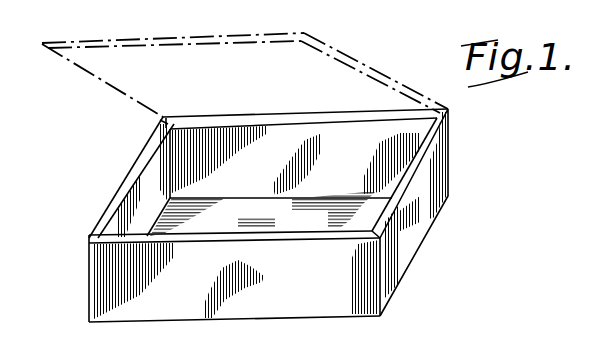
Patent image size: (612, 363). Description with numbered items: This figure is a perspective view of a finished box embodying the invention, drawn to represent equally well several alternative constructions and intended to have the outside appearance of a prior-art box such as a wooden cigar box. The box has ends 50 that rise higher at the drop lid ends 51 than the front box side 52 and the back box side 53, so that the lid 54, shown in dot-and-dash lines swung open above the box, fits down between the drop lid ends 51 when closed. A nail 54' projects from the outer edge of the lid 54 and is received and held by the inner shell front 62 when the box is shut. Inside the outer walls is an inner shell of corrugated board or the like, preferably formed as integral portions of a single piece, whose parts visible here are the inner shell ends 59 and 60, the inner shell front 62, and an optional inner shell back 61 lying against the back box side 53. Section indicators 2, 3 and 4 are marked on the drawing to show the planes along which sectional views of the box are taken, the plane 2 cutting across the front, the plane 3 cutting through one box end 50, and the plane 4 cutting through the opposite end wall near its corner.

The box ends 50 is at (417, 190).
The drop lid ends 51 is at (97, 238).
The front box side 52 is at (173, 262).
The back box side 53 is at (249, 143).
The lid 54 is at (374, 71).
The nail 54' is at (173, 64).
The inner shell end 59 is at (152, 142).
The inner shell end 60 is at (431, 173).
The inner shell back 61 is at (285, 181).
The inner shell front 62 is at (255, 289).
The section line 2- 2 is at (218, 274).
The section line 3- 3 is at (158, 172).
The section line 4- 4 is at (413, 220).